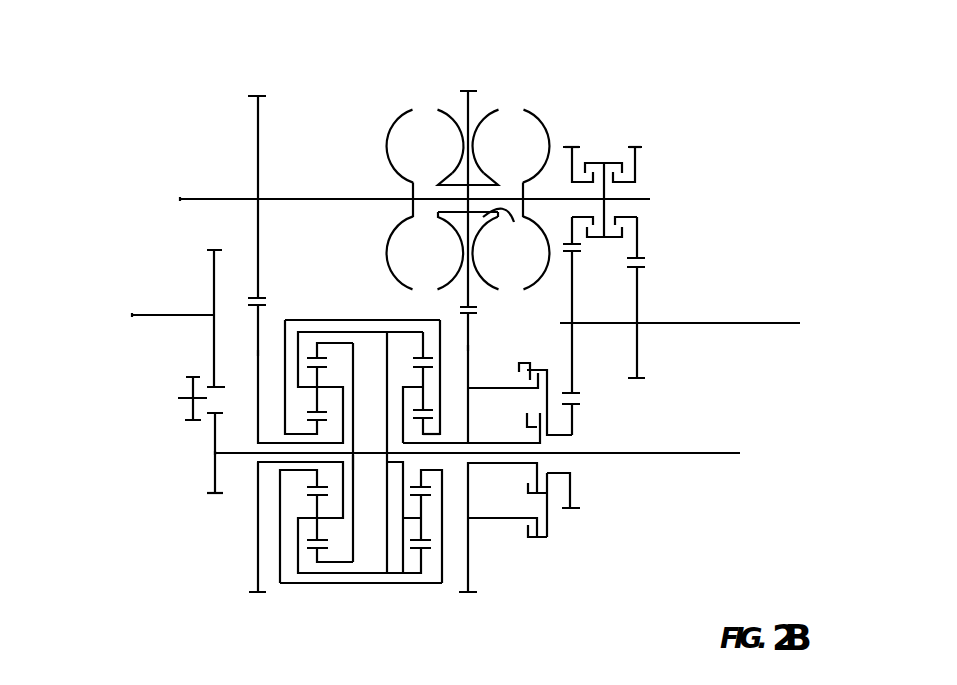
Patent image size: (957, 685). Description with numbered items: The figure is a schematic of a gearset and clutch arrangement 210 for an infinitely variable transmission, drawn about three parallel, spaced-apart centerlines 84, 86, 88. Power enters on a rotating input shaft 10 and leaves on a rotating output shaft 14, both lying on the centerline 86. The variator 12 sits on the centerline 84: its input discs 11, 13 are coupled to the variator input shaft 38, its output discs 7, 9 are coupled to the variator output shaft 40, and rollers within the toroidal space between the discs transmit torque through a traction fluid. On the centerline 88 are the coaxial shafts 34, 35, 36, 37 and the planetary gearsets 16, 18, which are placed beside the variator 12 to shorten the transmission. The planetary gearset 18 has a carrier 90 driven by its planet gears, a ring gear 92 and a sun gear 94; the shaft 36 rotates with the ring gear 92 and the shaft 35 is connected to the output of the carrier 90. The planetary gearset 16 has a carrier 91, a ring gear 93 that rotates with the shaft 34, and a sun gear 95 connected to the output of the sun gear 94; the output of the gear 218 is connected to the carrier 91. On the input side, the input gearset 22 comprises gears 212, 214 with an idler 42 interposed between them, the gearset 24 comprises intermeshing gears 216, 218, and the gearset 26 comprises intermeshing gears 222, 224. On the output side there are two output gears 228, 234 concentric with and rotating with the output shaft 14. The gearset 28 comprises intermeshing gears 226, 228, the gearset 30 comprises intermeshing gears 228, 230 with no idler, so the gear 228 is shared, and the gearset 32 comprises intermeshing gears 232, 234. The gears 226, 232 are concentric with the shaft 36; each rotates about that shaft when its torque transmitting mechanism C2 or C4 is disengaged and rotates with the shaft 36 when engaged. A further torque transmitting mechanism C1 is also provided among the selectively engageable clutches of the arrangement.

The gearset and clutch arrangement 210 is at (128, 82).
The centerline 84 is at (172, 197).
The centerline 86 is at (118, 318).
The centerline 88 is at (198, 455).
The variator input shaft 38 is at (316, 197).
The shaft 36 is at (650, 198).
The input shaft 10 is at (190, 315).
The output shaft 14 is at (728, 323).
The shaft 34 is at (235, 455).
The input gearset 22 is at (214, 510).
The gear 212 is at (215, 302).
The gear 214 is at (215, 442).
The idler 42 is at (182, 426).
The gear 216 is at (258, 248).
The gear 218 is at (257, 353).
The input gearset 24 is at (252, 596).
The carrier 91 is at (337, 382).
The ring gear 92 is at (423, 353).
The ring gear 93 is at (355, 382).
The carrier 90 is at (403, 407).
The sun gear 94 is at (425, 432).
The shaft 35 is at (477, 442).
The shaft 37 is at (505, 387).
The torque transmitting mechanism C1 is at (541, 399).
The planetary gearset 16 is at (320, 588).
The planetary gearset 18 is at (417, 588).
The sun gear 95 is at (318, 482).
The input gearset 26 is at (466, 602).
The output gearset 30 is at (572, 515).
The variator 12 is at (464, 153).
The input disc 11 is at (385, 137).
The input disc 13 is at (545, 110).
The output disc 7 is at (447, 173).
The output disc 9 is at (485, 173).
The variator output shaft 40 is at (455, 210).
The gear 222 is at (470, 291).
The gear 224 is at (468, 348).
The gear 226 is at (572, 163).
The gear 232 is at (635, 163).
The output gearset 28 is at (572, 143).
The output gearset 32 is at (640, 143).
The torque transmitting mechanism C2 is at (592, 145).
The torque transmitting mechanism C4 is at (618, 145).
The gear 228 is at (572, 293).
The gear 230 is at (572, 423).
The gear 234 is at (637, 307).